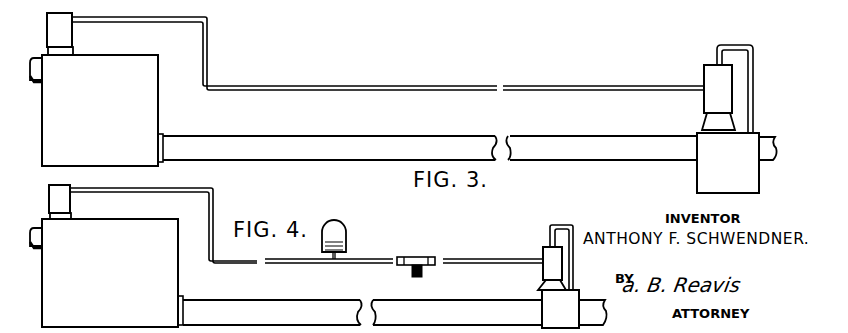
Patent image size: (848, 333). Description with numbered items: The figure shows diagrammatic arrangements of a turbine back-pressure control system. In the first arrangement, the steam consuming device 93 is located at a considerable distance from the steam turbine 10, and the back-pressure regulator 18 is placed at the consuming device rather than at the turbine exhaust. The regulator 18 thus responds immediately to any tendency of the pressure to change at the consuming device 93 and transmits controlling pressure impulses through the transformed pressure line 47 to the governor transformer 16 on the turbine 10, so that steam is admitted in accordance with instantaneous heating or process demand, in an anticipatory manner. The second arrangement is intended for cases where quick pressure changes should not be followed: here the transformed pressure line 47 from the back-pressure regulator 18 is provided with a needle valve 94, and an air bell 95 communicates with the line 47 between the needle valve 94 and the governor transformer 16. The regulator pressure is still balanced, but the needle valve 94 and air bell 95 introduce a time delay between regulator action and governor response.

In FIG. 3, the steam turbine 10 is at (148, 110).
In FIG. 4, the steam turbine 10 is at (163, 256).
In FIG. 3, the governor transformer 16 is at (72, 31).
In FIG. 4, the governor transformer 16 is at (68, 202).
In FIG. 3, the back-pressure regulator 18 is at (715, 78).
In FIG. 4, the back-pressure regulator 18 is at (553, 268).
In FIG. 3, the transformed pressure line 47 is at (597, 84).
In FIG. 4, the transformed pressure line 47 is at (212, 203).
In FIG. 3, the steam consuming device 93 is at (742, 170).
In FIG. 4, the needle valve 94 is at (421, 272).
In FIG. 4, the air bell 95 is at (346, 230).